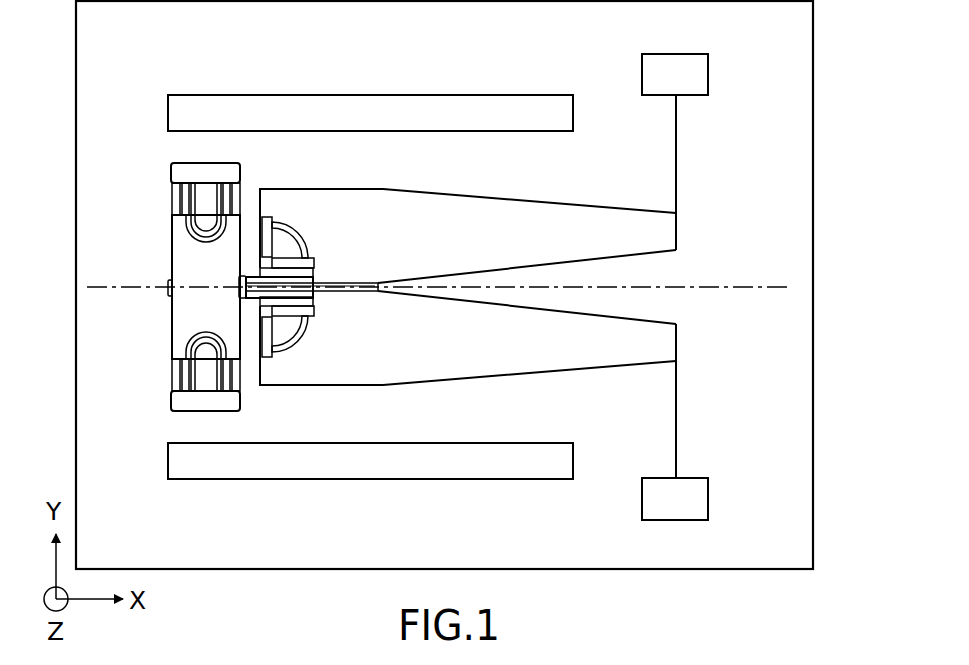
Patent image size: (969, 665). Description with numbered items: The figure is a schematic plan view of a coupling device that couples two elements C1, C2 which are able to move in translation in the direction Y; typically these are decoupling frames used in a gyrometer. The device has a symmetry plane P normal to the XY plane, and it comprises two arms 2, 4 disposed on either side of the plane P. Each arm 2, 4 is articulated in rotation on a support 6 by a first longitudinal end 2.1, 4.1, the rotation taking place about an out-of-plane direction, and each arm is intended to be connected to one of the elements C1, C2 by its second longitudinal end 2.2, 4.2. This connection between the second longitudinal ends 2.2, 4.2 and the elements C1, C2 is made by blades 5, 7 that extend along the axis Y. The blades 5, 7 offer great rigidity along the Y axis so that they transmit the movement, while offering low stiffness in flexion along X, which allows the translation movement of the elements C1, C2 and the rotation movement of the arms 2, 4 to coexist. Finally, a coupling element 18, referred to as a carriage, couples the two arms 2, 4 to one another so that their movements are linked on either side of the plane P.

The arm 2 is at (600, 203).
The first longitudinal end 2.1 is at (307, 205).
The second longitudinal end 2.2 is at (658, 232).
The arm 4 is at (600, 370).
The first longitudinal end 4.1 is at (320, 340).
The second longitudinal end 4.2 is at (658, 338).
The blade 5 is at (676, 122).
The support 6 is at (683, 558).
The blade 7 is at (676, 420).
The coupling element 18 is at (160, 318).
The element C1 is at (700, 73).
The element C2 is at (700, 500).
The symmetry plane P is at (750, 287).